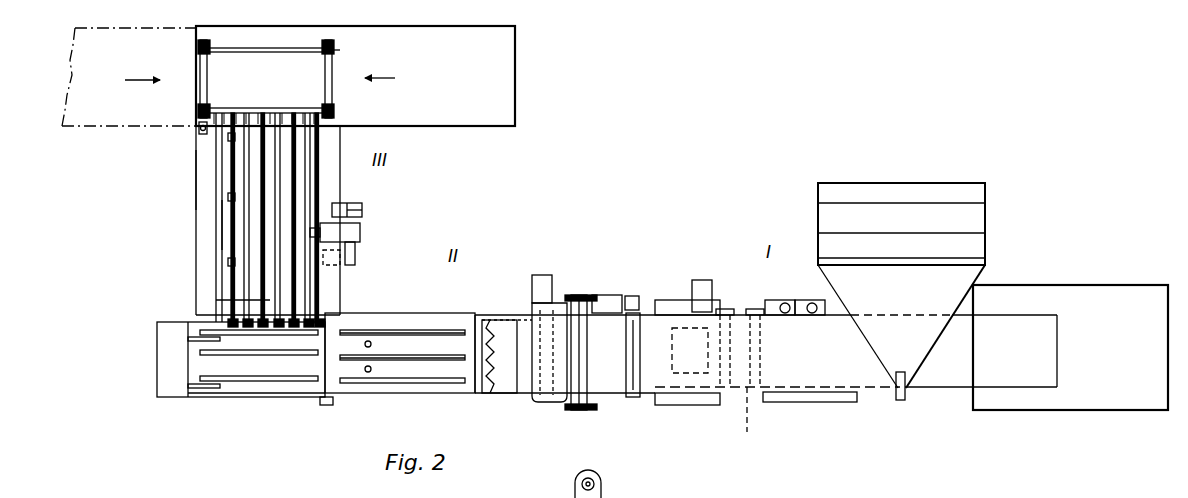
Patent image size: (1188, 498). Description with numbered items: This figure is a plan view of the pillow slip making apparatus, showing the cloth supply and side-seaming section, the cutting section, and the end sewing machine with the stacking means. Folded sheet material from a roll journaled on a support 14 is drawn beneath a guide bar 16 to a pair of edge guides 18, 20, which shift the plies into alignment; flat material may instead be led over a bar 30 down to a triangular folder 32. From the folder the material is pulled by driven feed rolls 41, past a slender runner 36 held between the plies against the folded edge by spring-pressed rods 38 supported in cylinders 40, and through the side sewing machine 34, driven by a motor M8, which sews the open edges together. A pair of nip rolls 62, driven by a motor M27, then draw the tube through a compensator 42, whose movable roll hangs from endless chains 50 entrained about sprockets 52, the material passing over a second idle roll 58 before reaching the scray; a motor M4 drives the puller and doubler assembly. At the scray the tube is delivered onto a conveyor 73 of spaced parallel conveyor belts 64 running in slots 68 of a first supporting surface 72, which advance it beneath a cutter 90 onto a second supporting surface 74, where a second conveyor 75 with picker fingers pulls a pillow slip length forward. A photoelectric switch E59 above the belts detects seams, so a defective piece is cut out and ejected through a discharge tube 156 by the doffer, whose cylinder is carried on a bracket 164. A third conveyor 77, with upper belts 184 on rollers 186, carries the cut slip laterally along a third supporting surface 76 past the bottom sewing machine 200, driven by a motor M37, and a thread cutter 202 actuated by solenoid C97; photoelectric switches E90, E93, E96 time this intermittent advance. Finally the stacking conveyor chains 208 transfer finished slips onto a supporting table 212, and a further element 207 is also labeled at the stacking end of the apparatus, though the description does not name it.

The supporting table 212 is at (505, 88).
The chains 208 is at (320, 75).
The bracket 164 is at (340, 66).
The ring 207 is at (198, 112).
The discharge tube 156 is at (160, 362).
The photoelectric switch E96 is at (230, 137).
The third supporting surface 76 is at (198, 180).
The photoelectric switch E93 is at (232, 197).
The upper belts 184 is at (225, 225).
The third conveyor 77 is at (206, 255).
The photoelectric switch E90 is at (232, 262).
The rollers 186 is at (268, 318).
The second supporting surface 74 is at (234, 388).
The second conveyor 75 is at (263, 410).
The cutter 90 is at (328, 402).
The first supporting surface 72 is at (422, 360).
The photoelectric switch E59 is at (369, 372).
The conveyor belts 64 is at (410, 333).
The slots 68 is at (452, 333).
The conveyor 73 is at (386, 306).
The nip rolls 62 is at (515, 395).
The second idle roll 58 is at (548, 404).
The motor M27 is at (549, 268).
The endless chains 50 is at (582, 412).
The motor M4 is at (605, 296).
The feed rolls 41 is at (637, 300).
The side sewing machine 34 is at (704, 283).
The edge guide 20 is at (780, 298).
The edge guide 18 is at (810, 298).
The cylinders 40 is at (752, 334).
The spring-pressed rods 38 is at (762, 357).
The motor M8 is at (687, 414).
The runner 36 is at (759, 416).
The triangular folder 32 is at (968, 272).
The guide bar 16 is at (897, 400).
The support 14 is at (1096, 398).
The bar 30 is at (959, 482).
The sprockets 52 is at (593, 476).
The compensator 42 is at (620, 497).
The thread cutter 202 is at (362, 205).
The solenoid C97 is at (362, 213).
The sewing machine 200 is at (360, 232).
The motor M37 is at (355, 262).